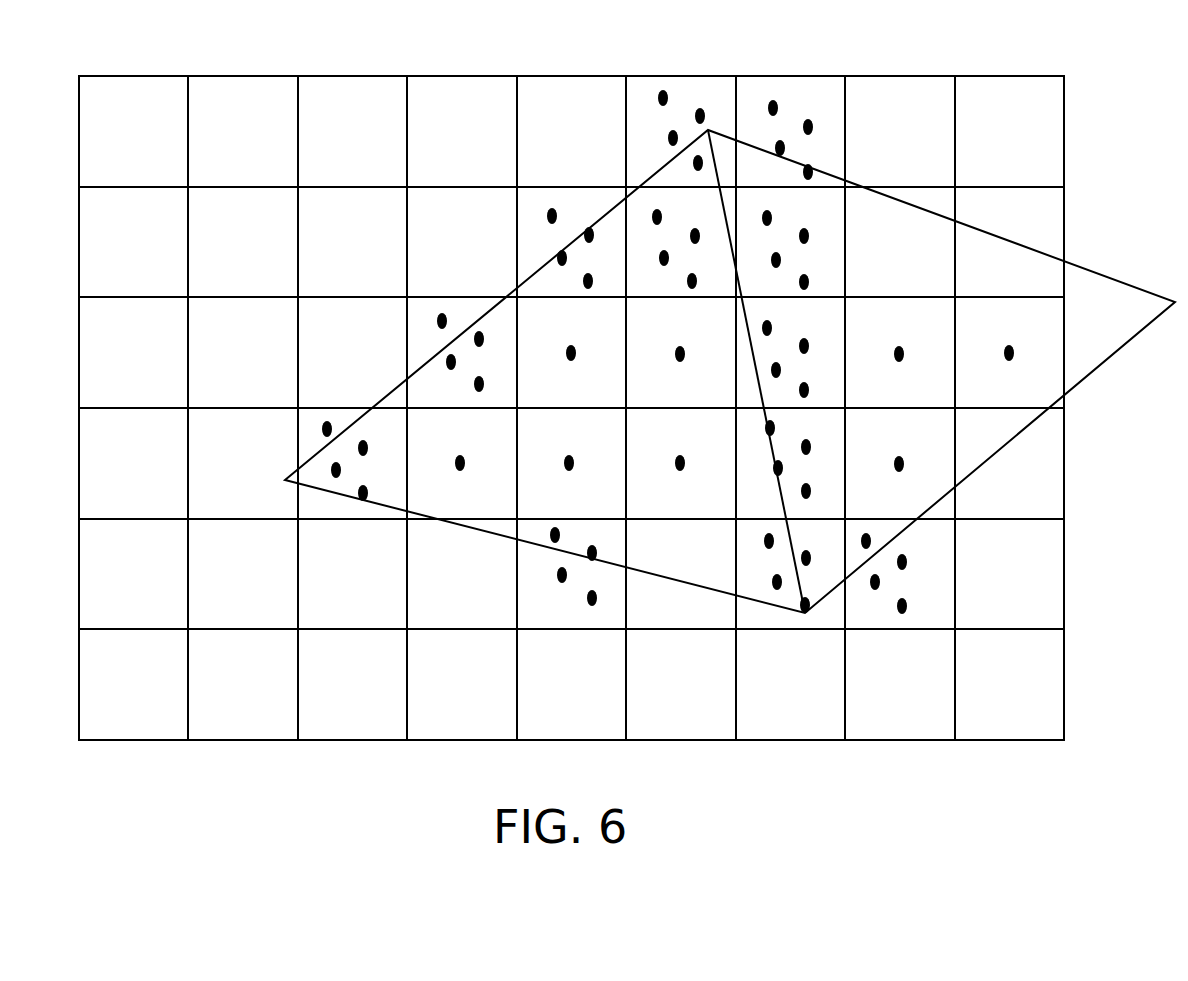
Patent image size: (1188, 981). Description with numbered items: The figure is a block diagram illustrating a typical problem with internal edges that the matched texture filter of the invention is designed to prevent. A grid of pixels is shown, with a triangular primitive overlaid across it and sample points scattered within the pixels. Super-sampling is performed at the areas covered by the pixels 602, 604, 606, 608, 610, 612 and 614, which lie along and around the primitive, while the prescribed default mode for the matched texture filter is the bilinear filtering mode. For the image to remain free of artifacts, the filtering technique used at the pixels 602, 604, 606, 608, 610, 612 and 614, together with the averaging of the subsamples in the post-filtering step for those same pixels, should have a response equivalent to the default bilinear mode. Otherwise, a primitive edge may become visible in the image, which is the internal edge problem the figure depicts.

The pixel 602 is at (636, 208).
The pixel 604 is at (790, 92).
The pixel 606 is at (837, 266).
The pixel 608 is at (826, 360).
The pixel 610 is at (825, 463).
The pixel 612 is at (944, 586).
The pixel 614 is at (760, 583).